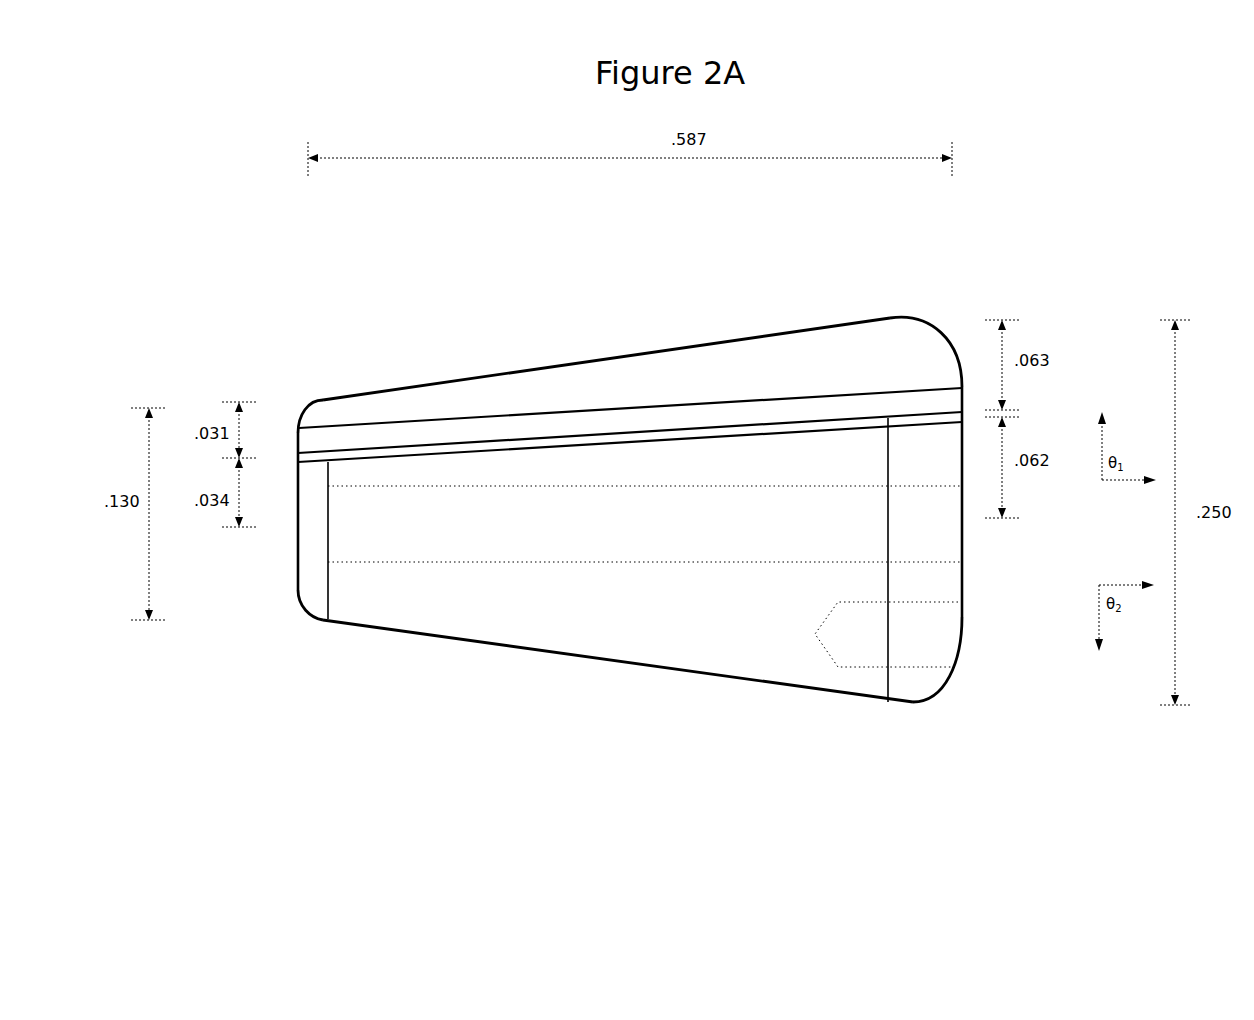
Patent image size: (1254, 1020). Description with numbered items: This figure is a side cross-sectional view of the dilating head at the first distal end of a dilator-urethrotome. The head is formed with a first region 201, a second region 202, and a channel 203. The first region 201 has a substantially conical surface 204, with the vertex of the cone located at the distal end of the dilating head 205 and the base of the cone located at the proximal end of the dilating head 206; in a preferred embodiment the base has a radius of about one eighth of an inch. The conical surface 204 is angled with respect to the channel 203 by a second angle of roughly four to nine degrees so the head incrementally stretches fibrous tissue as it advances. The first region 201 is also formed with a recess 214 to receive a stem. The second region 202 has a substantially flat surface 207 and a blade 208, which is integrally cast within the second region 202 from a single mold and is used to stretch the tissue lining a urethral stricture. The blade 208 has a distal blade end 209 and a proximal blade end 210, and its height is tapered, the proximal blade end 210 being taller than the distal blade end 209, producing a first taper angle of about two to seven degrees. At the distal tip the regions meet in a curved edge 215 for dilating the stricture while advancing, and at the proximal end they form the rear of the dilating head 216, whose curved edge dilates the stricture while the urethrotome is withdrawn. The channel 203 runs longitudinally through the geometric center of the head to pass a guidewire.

The first region 201 is at (597, 670).
The second region 202 is at (658, 427).
The channel 203 is at (472, 567).
The conical surface 204 is at (778, 790).
The distal end of the dilating head 205 is at (252, 424).
The proximal end of the dilating head 206 is at (860, 318).
The flat surface 207 is at (807, 418).
The blade 208 is at (472, 376).
The distal blade end 209 is at (305, 410).
The proximal blade end 210 is at (958, 335).
The recess 214 is at (875, 640).
The curved edge 215 is at (297, 590).
The rear of the dilating head 216 is at (855, 700).